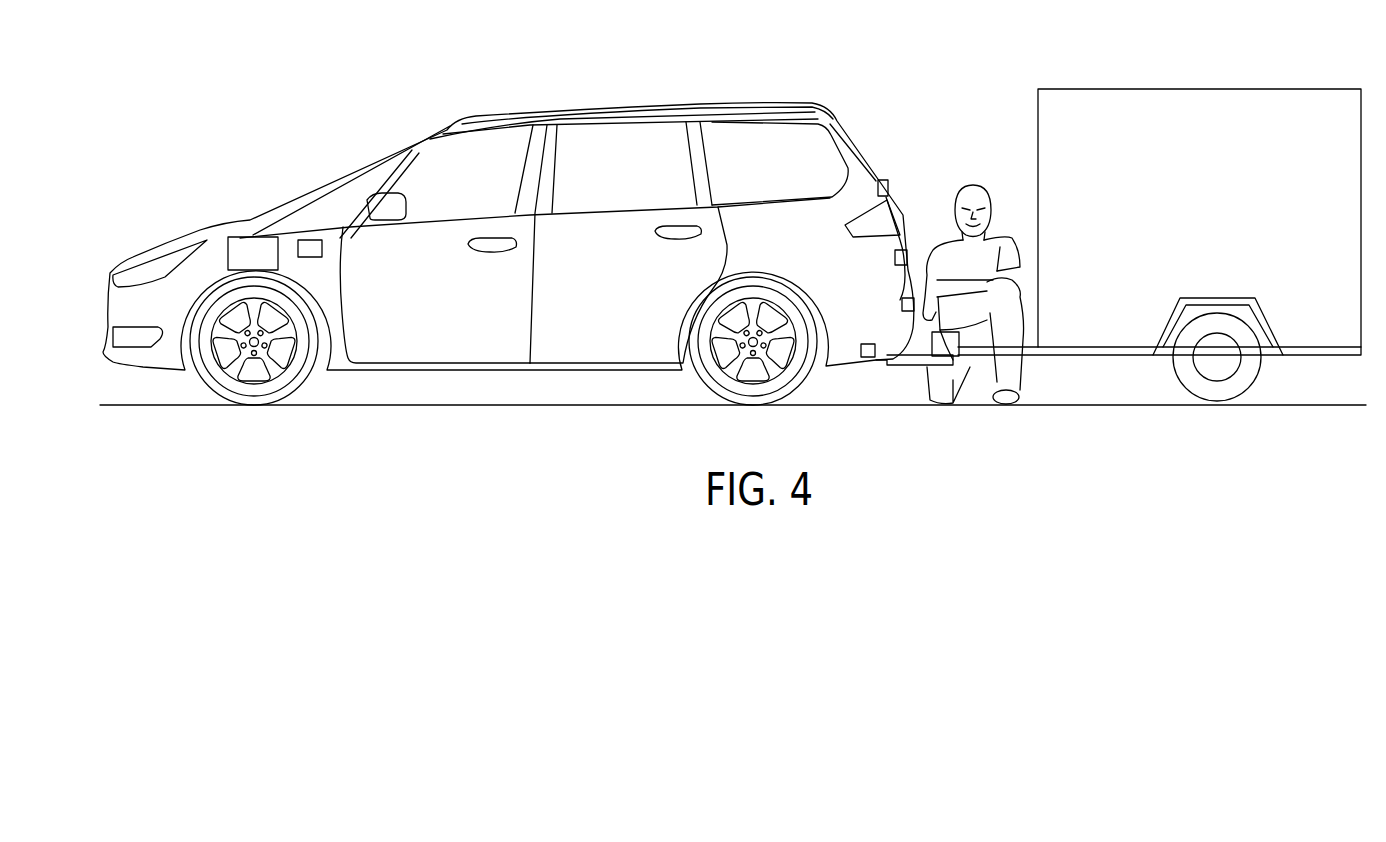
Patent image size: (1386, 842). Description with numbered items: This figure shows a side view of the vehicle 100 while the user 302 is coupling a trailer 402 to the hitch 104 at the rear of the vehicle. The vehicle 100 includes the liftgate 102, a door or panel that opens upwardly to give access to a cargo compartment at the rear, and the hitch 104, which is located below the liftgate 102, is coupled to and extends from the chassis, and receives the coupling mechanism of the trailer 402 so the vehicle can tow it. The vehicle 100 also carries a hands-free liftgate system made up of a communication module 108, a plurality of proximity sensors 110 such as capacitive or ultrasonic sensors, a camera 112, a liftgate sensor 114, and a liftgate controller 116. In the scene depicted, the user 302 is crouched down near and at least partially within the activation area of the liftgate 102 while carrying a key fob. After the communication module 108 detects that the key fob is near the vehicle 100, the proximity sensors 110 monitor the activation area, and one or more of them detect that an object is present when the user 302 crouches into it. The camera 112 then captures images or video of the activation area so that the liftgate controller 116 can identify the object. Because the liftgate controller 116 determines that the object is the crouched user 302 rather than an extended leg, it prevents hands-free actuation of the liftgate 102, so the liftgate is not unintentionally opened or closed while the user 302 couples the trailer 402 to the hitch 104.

The vehicle 100 is at (763, 57).
The liftgate 102 is at (872, 148).
The hitch 104 is at (899, 368).
The communication module 108 is at (310, 238).
The proximity sensors 110 is at (901, 303).
The camera 112 is at (894, 257).
The liftgate sensor 114 is at (876, 187).
The liftgate controller 116 is at (268, 263).
The user 302 is at (975, 183).
The trailer 402 is at (1200, 89).